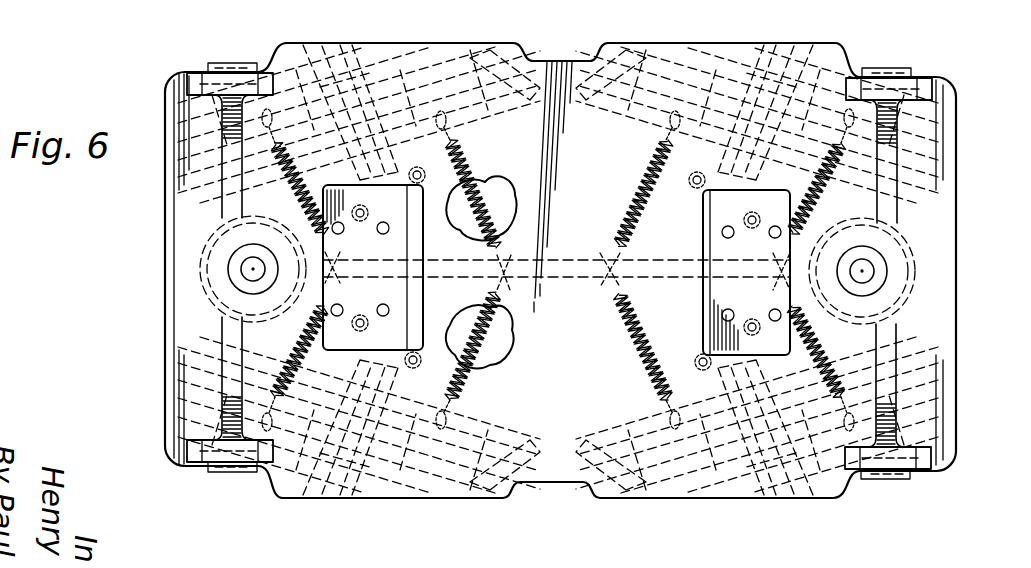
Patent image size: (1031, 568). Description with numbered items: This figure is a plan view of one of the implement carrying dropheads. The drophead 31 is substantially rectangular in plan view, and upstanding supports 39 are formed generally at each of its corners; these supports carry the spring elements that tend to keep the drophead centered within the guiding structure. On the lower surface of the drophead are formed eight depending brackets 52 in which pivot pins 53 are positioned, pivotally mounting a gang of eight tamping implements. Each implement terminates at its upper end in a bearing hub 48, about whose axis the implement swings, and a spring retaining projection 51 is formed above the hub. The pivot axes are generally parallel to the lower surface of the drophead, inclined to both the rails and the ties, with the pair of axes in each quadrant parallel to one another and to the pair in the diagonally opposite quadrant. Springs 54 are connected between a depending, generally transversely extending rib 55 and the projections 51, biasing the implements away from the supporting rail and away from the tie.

The drophead 31 is at (563, 483).
The upstanding support 39 is at (228, 70).
The bearing hub 48 is at (288, 62).
The spring retaining projection 51 is at (265, 128).
The depending bracket 52 is at (351, 52).
The pivot pin 53 is at (267, 45).
The spring 54 is at (300, 177).
The rib 55 is at (555, 279).